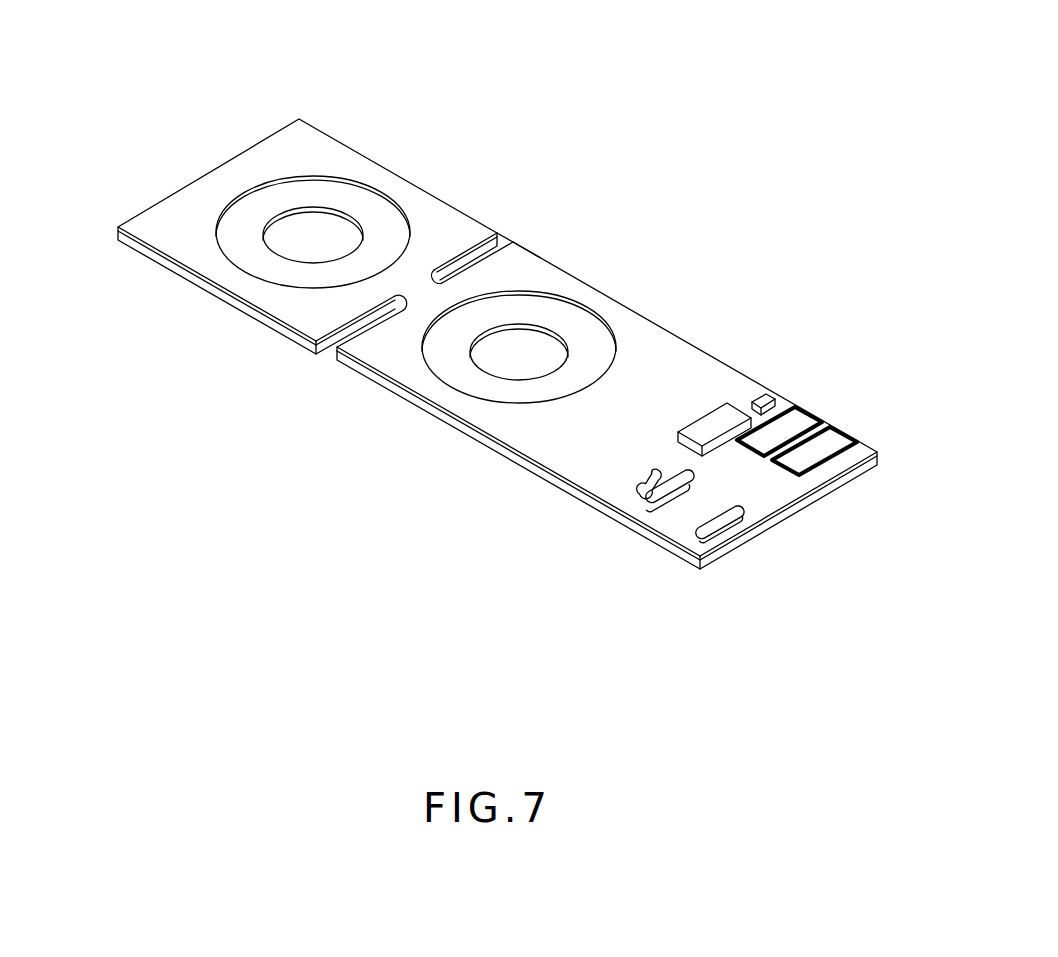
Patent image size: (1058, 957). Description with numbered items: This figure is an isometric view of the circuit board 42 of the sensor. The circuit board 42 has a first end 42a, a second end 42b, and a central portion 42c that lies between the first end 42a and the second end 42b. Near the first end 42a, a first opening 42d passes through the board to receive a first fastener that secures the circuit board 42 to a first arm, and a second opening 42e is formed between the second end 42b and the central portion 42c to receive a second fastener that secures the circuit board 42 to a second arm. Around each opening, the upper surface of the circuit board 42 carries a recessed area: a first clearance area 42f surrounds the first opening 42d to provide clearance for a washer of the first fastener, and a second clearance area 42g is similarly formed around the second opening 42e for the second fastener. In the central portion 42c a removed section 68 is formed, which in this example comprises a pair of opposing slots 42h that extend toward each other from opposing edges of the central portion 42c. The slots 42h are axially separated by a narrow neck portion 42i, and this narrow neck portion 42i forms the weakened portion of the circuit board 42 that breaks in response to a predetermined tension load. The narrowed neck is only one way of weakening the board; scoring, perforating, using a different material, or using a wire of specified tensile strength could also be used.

The circuit board 42 is at (165, 155).
The first end 42a is at (308, 138).
The second end 42b is at (827, 423).
The central portion 42c is at (558, 283).
The first opening 42d is at (342, 210).
The second opening 42e is at (562, 338).
The first clearance area 42f is at (270, 198).
The second clearance area 42g is at (598, 358).
The opposing slots 42h is at (495, 253).
The narrow neck portion 42i is at (417, 288).
The removed section 68 is at (513, 232).